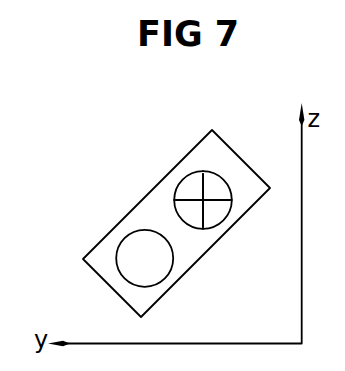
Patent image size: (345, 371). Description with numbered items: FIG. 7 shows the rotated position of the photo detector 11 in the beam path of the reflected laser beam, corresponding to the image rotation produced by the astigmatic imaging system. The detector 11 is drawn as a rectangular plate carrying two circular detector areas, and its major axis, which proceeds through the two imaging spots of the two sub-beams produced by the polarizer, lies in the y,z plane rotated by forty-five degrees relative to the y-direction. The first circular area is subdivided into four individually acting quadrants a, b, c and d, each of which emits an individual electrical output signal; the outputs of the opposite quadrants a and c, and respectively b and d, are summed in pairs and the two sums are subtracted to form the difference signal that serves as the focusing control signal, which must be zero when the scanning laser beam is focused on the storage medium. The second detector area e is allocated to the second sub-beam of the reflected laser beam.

The photo detector 11 is at (152, 307).
The quadrant a is at (188, 185).
The quadrant b is at (215, 185).
The quadrant c is at (213, 215).
The quadrant d is at (187, 210).
The second detector area e is at (144, 258).